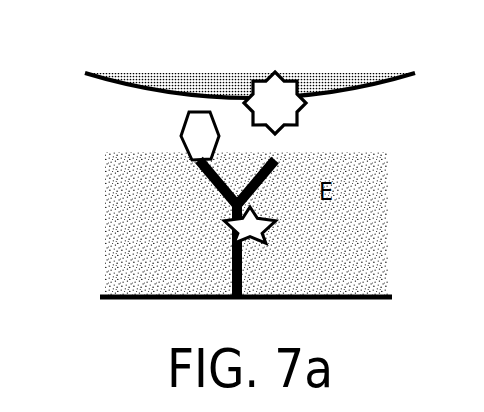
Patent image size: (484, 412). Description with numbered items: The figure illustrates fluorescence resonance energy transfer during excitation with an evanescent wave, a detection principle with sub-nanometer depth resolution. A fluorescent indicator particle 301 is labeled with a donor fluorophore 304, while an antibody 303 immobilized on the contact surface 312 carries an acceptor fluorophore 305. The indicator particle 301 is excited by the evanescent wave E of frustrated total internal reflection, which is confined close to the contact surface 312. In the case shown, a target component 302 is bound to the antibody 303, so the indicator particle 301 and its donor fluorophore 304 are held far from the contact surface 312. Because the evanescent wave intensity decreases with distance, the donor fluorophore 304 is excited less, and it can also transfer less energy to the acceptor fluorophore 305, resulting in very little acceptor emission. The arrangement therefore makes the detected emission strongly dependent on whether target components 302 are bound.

The indicator particle 301 is at (150, 76).
The target component 302 is at (184, 127).
The antibody 303 is at (231, 207).
The donor fluorophore 304 is at (275, 72).
The acceptor fluorophore 305 is at (266, 238).
The contact surface 312 is at (133, 290).